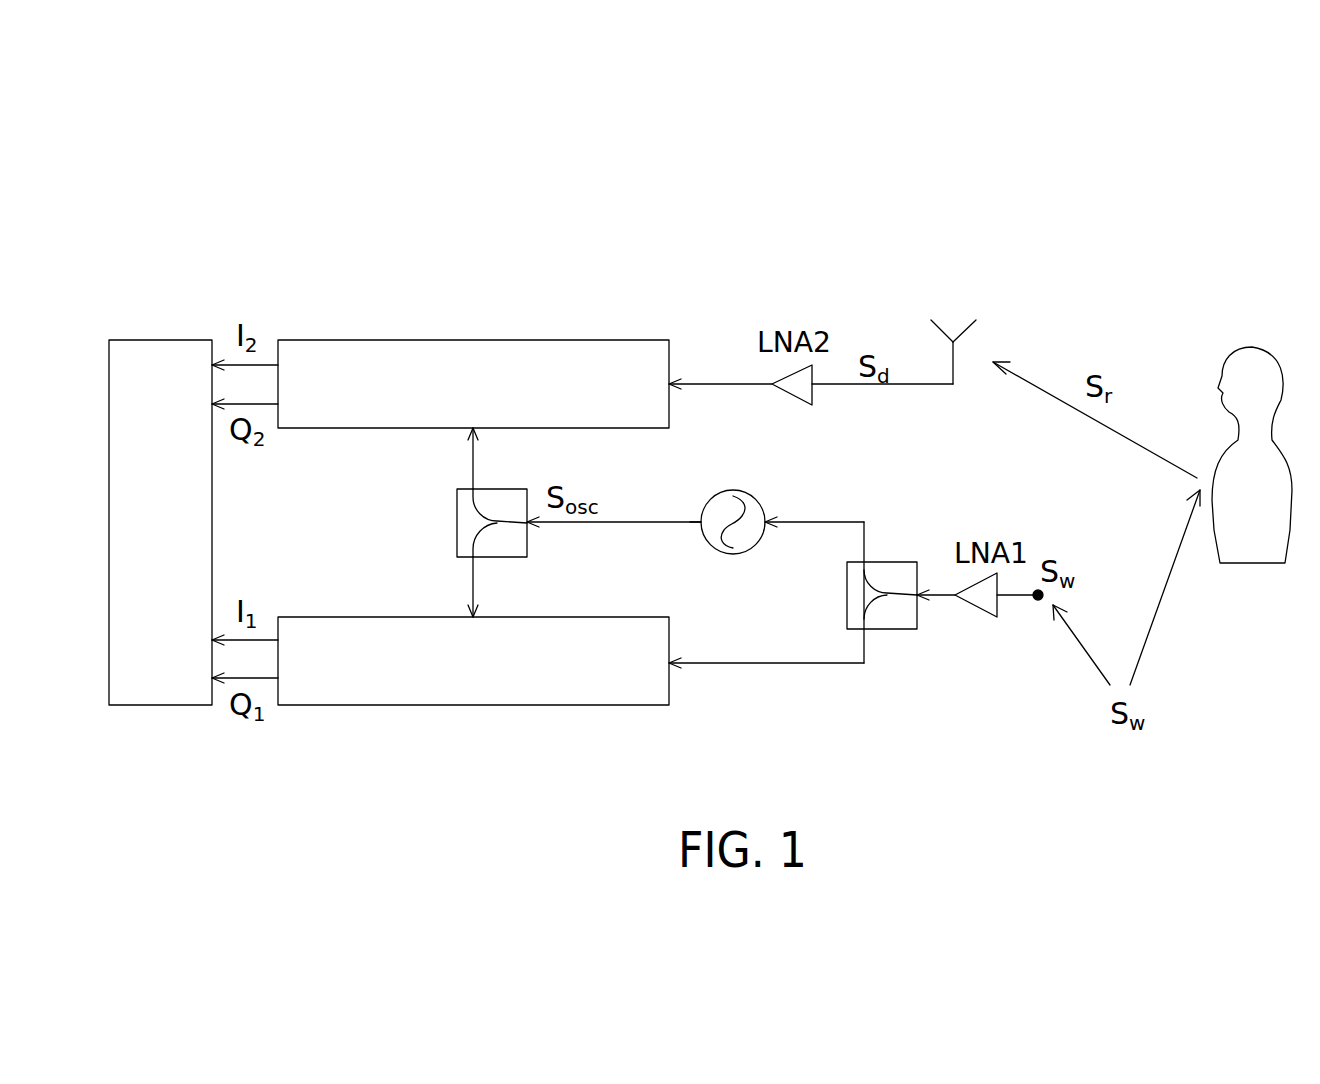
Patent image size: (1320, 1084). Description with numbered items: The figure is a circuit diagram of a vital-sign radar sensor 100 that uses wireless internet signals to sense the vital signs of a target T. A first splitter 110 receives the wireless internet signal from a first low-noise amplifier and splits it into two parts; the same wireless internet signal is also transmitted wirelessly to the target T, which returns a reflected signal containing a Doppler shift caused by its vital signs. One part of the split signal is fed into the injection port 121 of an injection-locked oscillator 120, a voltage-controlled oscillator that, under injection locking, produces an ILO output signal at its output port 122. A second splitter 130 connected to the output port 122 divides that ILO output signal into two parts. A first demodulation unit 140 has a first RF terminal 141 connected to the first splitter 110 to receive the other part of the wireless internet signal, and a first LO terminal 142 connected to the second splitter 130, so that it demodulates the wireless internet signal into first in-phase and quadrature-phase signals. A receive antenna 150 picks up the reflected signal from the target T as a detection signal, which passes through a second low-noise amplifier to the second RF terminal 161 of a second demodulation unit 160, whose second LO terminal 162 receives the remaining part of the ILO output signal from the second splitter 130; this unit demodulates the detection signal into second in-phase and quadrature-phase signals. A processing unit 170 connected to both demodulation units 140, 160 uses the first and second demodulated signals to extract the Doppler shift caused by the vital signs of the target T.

The vital-sign radar sensor 100 is at (232, 233).
The first splitter 110 is at (900, 560).
The injection-locked oscillator 120 is at (757, 494).
The injection port 121 is at (766, 532).
The output port 122 is at (702, 524).
The second splitter 130 is at (528, 550).
The first demodulation unit 140 is at (450, 705).
The first RF terminal 141 is at (672, 668).
The first LO terminal 142 is at (466, 614).
The receive antenna 150 is at (964, 332).
The second demodulation unit 160 is at (473, 340).
The second RF terminal 161 is at (674, 378).
The second LO terminal 162 is at (480, 434).
The processing unit 170 is at (160, 340).
The target T is at (1252, 345).